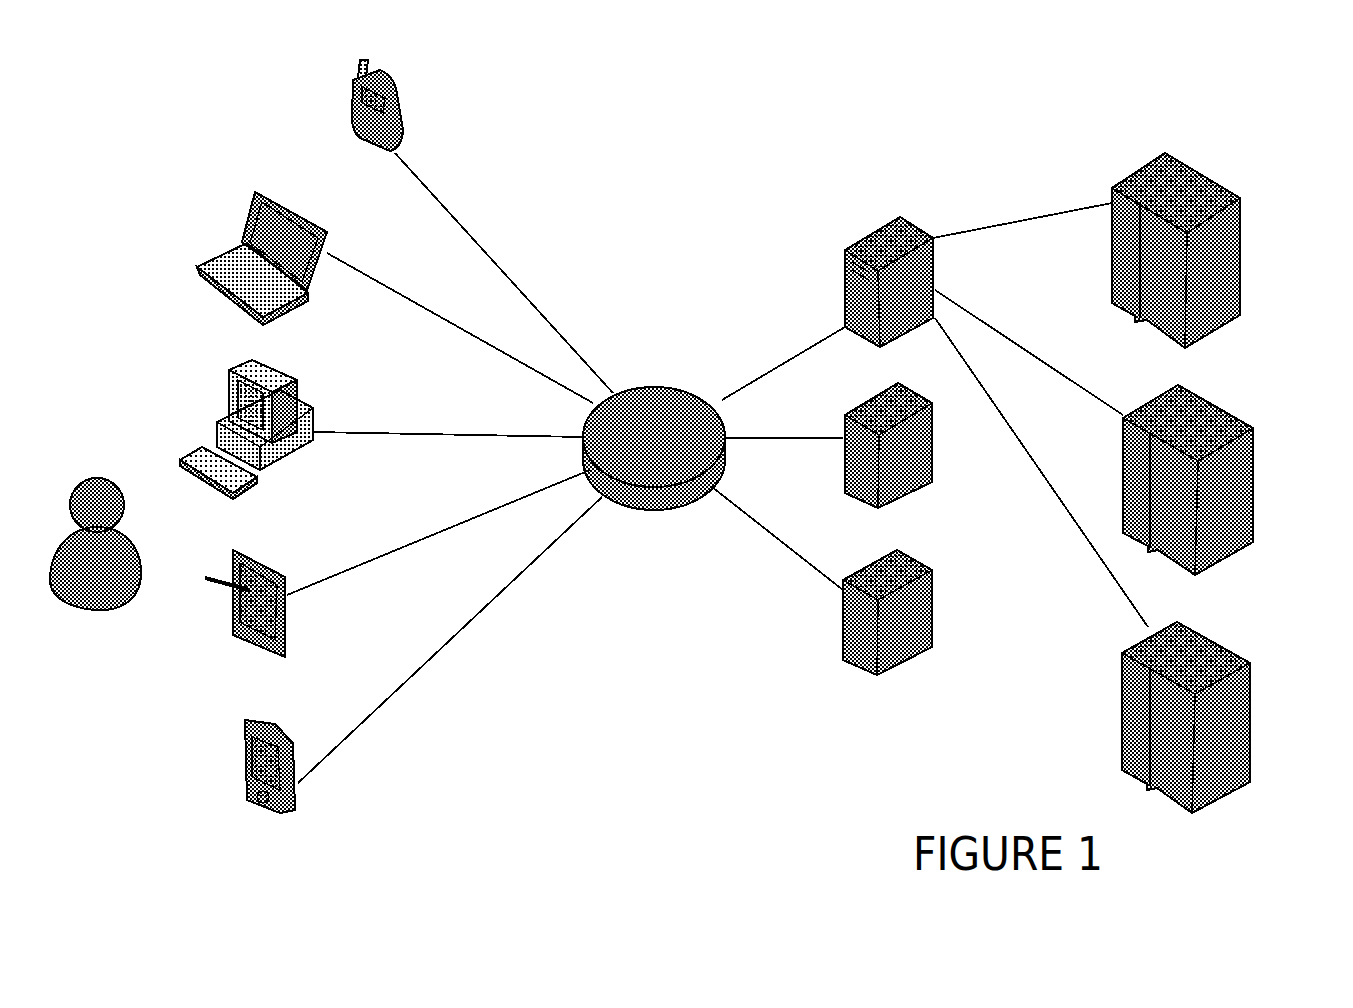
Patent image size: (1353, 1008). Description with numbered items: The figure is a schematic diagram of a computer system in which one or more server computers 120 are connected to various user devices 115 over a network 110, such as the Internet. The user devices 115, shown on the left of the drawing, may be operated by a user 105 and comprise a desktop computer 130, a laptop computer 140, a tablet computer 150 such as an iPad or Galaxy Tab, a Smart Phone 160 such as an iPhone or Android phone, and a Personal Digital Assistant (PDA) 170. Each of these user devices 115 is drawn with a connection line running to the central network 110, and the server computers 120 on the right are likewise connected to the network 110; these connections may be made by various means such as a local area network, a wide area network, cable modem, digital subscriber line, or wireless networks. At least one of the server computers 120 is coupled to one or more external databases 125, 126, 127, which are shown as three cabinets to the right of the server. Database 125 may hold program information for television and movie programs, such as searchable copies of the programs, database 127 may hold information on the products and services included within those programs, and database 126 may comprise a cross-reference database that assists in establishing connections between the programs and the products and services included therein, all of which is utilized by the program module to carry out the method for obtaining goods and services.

The user 105 is at (95, 567).
The network 110 is at (654, 425).
The user devices 115 is at (188, 186).
The server computers 120 is at (880, 227).
The database 125 is at (1215, 212).
The database 126 is at (1225, 487).
The database 127 is at (1235, 720).
The desktop computer 130 is at (272, 429).
The laptop computer 140 is at (285, 258).
The tablet computer 150 is at (278, 603).
The Smart Phone 160 is at (400, 105).
The Personal Digital Assistant (PDA) 170 is at (293, 785).